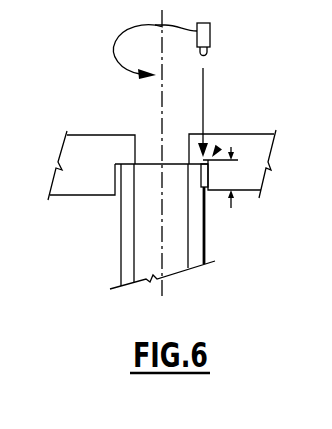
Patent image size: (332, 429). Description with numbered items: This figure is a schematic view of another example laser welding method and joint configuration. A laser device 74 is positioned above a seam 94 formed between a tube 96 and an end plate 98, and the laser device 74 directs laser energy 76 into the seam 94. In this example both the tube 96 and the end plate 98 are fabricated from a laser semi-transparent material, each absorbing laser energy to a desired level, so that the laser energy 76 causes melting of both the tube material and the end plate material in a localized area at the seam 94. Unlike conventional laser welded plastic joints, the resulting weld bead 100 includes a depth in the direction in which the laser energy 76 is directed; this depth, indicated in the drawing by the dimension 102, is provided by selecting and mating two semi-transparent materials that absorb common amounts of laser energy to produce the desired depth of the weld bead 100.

The laser device 74 is at (210, 30).
The laser energy 76 is at (203, 95).
The seam 94 is at (215, 151).
The tube 96 is at (126, 214).
The end plate 98 is at (97, 191).
The weld bead 100 is at (200, 178).
The distance 102 is at (231, 206).